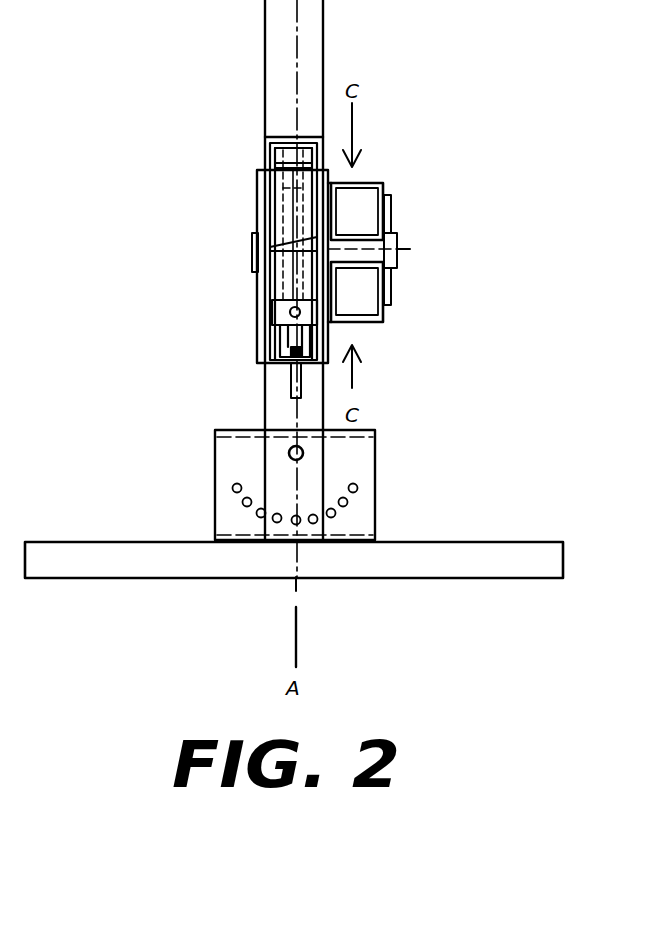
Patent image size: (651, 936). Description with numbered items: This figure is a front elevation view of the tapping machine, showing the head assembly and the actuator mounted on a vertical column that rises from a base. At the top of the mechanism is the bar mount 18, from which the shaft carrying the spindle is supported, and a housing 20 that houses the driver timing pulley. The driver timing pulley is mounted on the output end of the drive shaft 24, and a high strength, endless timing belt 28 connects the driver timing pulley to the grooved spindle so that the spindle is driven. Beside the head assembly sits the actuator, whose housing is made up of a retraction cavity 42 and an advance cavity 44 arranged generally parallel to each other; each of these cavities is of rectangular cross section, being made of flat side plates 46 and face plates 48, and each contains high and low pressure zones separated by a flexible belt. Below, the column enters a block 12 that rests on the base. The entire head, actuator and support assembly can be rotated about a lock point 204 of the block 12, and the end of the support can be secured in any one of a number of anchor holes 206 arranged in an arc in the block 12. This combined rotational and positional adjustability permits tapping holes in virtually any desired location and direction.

The block 12 is at (375, 508).
The bar mount 18 is at (272, 157).
The housing 20 is at (260, 190).
The drive shaft 24 is at (363, 213).
The timing belt 28 is at (252, 252).
The retraction cavity 42 is at (393, 210).
The advance cavity 44 is at (367, 281).
The side plates 46 is at (367, 183).
The face plates 48 is at (392, 188).
The lock point 204 is at (288, 453).
The anchor holes 206 is at (247, 502).